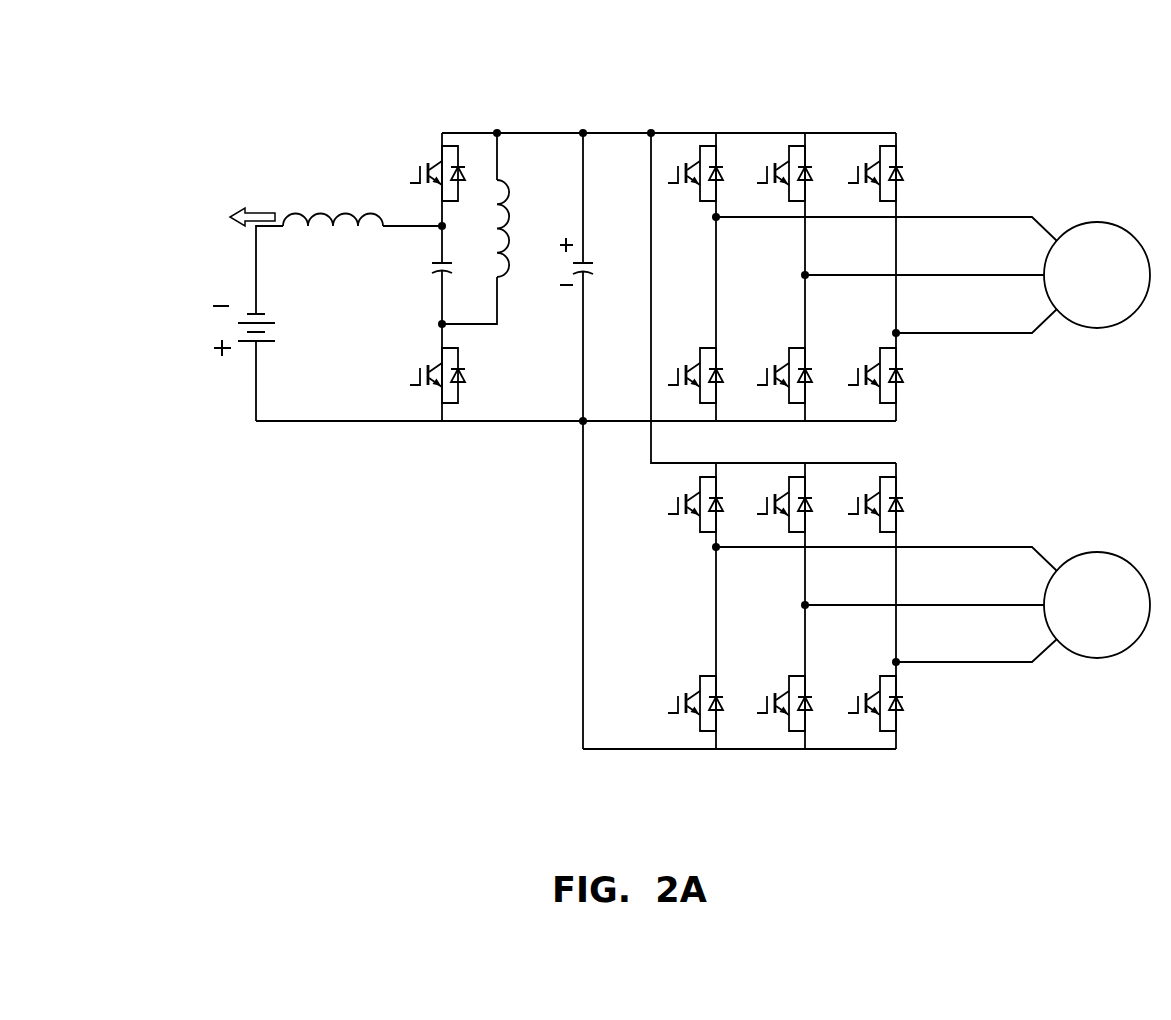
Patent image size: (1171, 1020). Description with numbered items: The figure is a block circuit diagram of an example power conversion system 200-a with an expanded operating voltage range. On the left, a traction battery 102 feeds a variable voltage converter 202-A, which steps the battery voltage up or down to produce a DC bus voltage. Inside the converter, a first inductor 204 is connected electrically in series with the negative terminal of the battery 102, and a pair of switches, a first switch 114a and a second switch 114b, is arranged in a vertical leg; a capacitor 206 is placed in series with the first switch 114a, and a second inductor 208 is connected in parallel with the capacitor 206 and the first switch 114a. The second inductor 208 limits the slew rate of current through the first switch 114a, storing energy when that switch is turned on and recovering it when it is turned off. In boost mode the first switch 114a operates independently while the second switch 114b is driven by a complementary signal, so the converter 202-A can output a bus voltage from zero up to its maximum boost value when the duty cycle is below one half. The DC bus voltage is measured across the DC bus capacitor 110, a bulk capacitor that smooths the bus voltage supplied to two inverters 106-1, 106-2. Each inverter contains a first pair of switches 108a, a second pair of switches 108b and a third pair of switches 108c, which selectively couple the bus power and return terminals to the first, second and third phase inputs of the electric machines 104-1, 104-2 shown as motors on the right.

The power conversion system 200-a is at (1128, 77).
The traction battery 102 is at (252, 313).
The variable voltage converter 202-A is at (285, 197).
The first inductor 204 is at (350, 230).
The capacitor 206 is at (433, 263).
The second inductor 208 is at (509, 217).
The first switch 114a is at (419, 165).
The second switch 114b is at (420, 378).
The DC bus capacitor 110 is at (589, 262).
The inverter 106-1 is at (722, 70).
The inverter 106-2 is at (728, 821).
The first pair of switches 108a is at (690, 162).
The second pair of switches 108b is at (779, 162).
The third pair of switches 108c is at (870, 162).
The electric machine 104-1 is at (1066, 305).
The electric machine 104-2 is at (1066, 634).